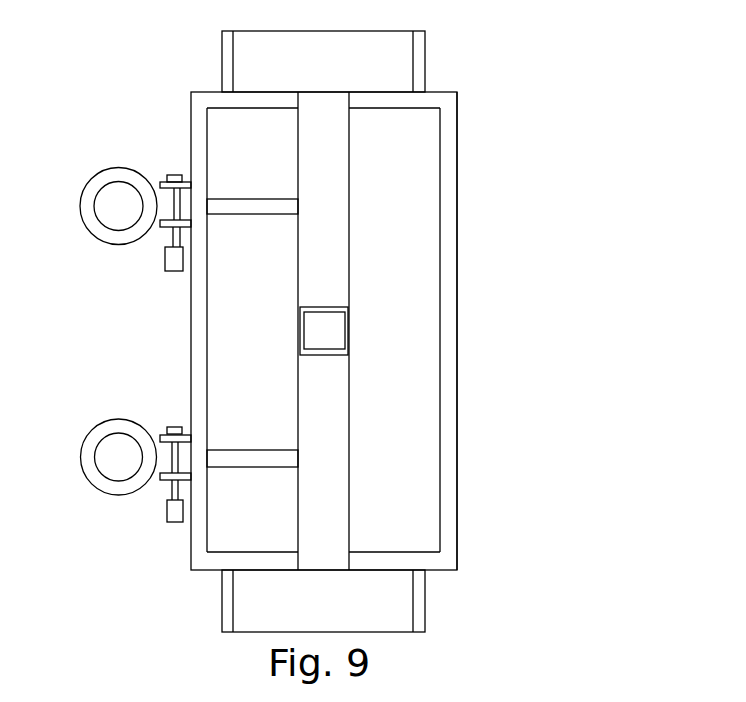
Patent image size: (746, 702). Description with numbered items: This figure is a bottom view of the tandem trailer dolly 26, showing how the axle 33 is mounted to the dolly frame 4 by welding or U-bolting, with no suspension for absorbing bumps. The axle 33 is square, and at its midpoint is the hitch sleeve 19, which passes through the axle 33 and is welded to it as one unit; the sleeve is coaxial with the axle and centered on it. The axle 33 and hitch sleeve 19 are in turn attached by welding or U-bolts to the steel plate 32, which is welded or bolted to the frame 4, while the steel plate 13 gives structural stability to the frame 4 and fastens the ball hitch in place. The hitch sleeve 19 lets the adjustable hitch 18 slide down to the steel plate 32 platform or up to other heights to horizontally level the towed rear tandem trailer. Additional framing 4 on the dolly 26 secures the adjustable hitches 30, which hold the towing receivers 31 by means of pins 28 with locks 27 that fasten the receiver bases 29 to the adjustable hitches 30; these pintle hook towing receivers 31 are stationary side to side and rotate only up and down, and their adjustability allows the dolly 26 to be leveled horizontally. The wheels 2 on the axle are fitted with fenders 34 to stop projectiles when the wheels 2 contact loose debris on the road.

The wheel 2 is at (415, 60).
The frame 4 is at (255, 197).
The steel plate 13 is at (382, 408).
The adjustable hitch 18 is at (347, 327).
The hitch sleeve 19 is at (351, 353).
The tandem trailer dolly 26 is at (545, 509).
The lock 27 is at (165, 270).
The pin 28 is at (182, 177).
The base 29 is at (167, 178).
The adjustable hitch 30 is at (173, 458).
The towing receiver 31 is at (115, 495).
The steel plate 32 is at (395, 220).
The axle 33 is at (352, 185).
The fender 34 is at (418, 80).